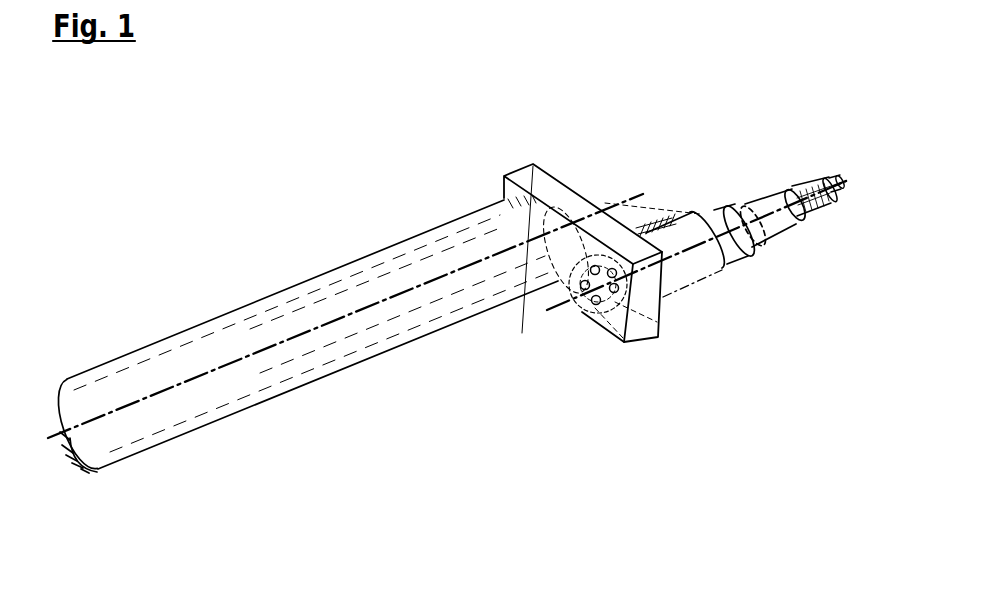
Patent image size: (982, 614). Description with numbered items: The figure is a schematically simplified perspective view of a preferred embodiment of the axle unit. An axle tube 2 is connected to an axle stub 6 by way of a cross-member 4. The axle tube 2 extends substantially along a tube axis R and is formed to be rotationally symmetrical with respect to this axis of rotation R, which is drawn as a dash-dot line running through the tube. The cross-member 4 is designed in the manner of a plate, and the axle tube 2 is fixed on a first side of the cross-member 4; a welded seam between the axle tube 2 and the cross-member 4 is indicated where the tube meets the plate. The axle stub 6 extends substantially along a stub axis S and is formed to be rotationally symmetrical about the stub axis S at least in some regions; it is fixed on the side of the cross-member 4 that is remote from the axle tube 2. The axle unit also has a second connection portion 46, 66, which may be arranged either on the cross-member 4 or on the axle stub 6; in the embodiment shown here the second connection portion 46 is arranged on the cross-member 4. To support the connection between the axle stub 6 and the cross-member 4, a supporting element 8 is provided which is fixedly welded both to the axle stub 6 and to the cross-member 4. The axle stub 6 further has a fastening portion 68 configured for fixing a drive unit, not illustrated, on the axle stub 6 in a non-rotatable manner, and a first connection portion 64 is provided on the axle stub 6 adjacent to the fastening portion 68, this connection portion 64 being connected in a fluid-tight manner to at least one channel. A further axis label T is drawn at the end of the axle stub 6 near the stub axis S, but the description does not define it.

The axle tube 2 is at (218, 389).
The cross-member 4 is at (523, 181).
The axle stub 6 is at (695, 265).
The supporting element 8 is at (603, 203).
The second connection portion 46 is at (608, 298).
The second connection portion 66 is at (683, 487).
The first connection portion 64 is at (828, 180).
The fastening portion 68 is at (797, 182).
The tube axis R is at (424, 286).
The connector axis T is at (857, 237).
The stub axis S is at (860, 233).